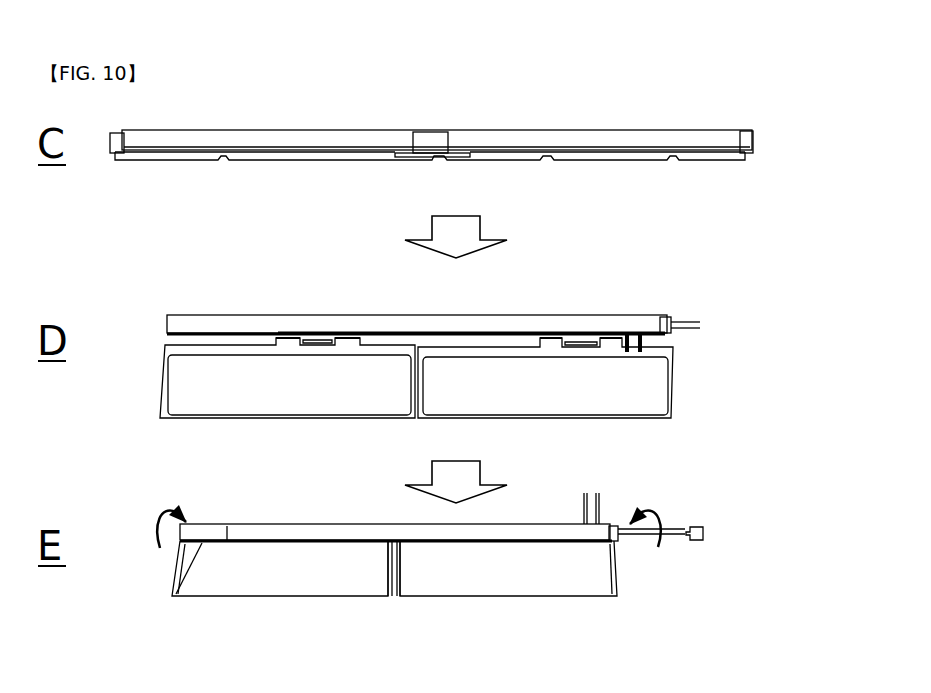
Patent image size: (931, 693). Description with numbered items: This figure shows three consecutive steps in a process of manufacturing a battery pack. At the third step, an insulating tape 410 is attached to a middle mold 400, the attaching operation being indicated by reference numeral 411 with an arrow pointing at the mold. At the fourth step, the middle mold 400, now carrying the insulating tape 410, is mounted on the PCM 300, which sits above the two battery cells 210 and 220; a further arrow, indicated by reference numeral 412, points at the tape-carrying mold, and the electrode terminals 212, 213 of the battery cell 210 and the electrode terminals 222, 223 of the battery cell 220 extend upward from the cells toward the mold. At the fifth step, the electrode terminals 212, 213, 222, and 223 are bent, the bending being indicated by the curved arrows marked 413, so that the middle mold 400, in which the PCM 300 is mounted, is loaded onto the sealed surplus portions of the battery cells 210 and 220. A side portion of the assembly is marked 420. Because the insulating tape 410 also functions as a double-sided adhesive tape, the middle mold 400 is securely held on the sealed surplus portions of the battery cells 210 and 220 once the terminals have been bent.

The battery cell 210 is at (614, 393).
The electrode terminal 212 is at (605, 344).
The electrode terminal 213 is at (540, 344).
The battery cell 220 is at (217, 395).
The electrode terminal 222 is at (355, 342).
The electrode terminal 223 is at (288, 342).
The PCM 300 is at (382, 544).
The middle mold 400 is at (248, 160).
The insulating tape 410 is at (595, 143).
The attaching of the insulating tape 411 is at (493, 150).
The adhesive layer 412 is at (470, 328).
The bending of the electrode terminals 413 is at (160, 532).
The side wall of cover 420 is at (176, 594).